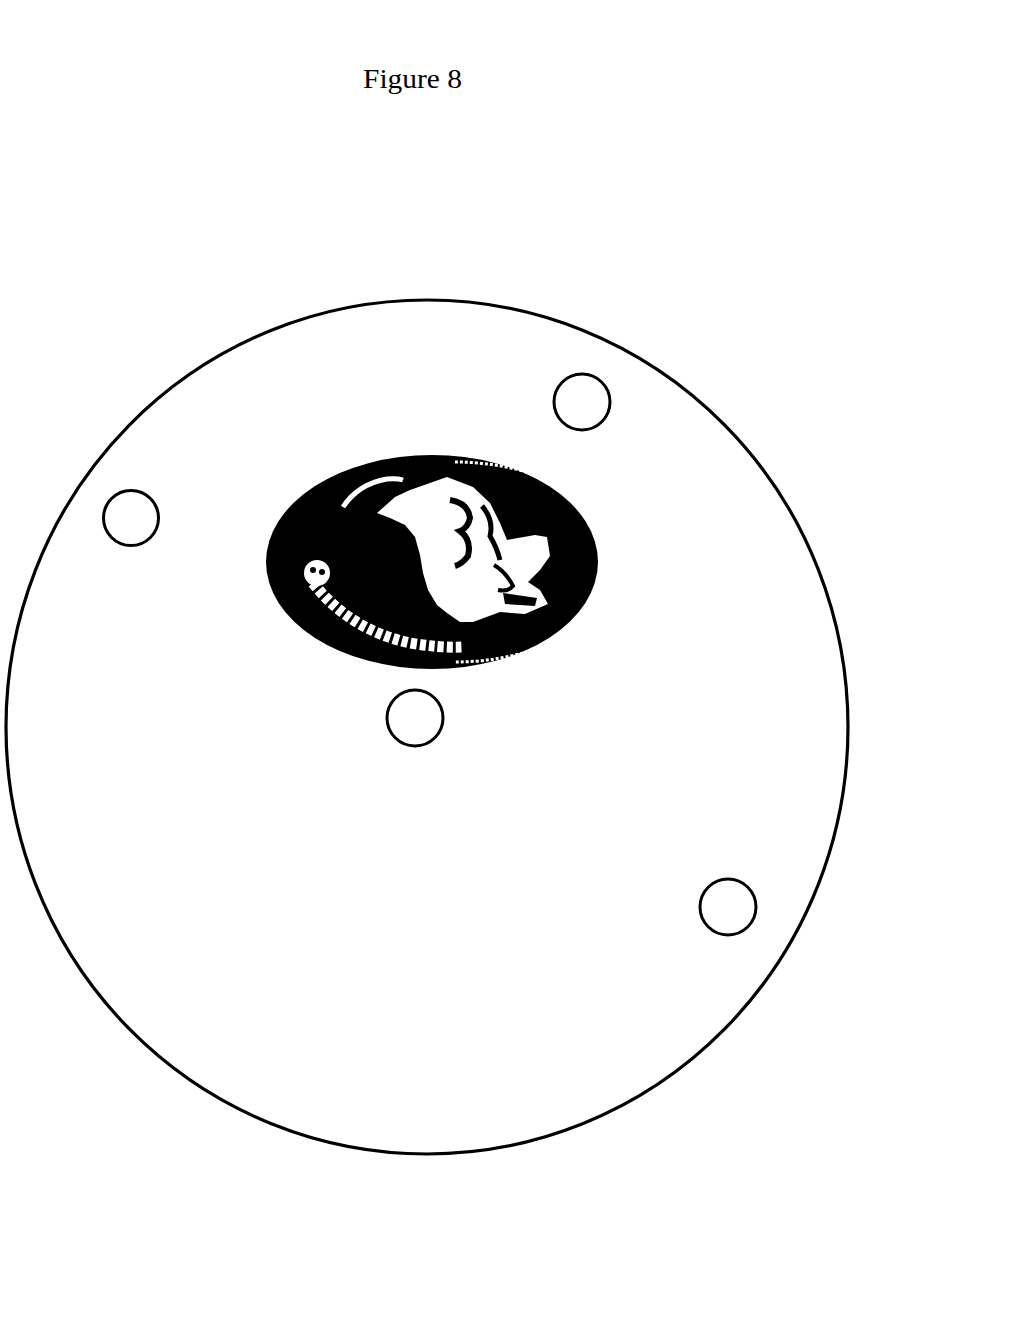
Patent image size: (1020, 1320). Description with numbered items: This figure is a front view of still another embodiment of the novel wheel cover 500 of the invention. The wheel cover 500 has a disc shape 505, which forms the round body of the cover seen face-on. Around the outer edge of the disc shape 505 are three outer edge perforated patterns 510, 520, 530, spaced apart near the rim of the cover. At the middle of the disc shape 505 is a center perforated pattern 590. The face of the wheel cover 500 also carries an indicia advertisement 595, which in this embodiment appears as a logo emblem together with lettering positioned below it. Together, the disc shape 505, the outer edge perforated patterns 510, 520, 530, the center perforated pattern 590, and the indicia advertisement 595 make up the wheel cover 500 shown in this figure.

The wheel cover 500 is at (215, 321).
The disc shape 505 is at (435, 323).
The outer edge perforated pattern 510 is at (153, 500).
The outer edge perforated pattern 520 is at (609, 412).
The outer edge perforated pattern 530 is at (756, 902).
The center perforated pattern 590 is at (387, 721).
The indicia advertisement 595 is at (598, 568).